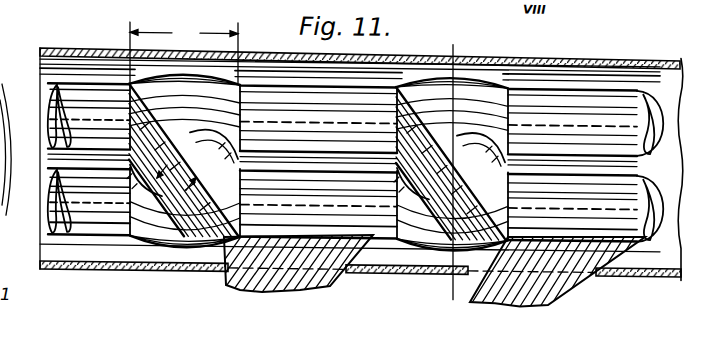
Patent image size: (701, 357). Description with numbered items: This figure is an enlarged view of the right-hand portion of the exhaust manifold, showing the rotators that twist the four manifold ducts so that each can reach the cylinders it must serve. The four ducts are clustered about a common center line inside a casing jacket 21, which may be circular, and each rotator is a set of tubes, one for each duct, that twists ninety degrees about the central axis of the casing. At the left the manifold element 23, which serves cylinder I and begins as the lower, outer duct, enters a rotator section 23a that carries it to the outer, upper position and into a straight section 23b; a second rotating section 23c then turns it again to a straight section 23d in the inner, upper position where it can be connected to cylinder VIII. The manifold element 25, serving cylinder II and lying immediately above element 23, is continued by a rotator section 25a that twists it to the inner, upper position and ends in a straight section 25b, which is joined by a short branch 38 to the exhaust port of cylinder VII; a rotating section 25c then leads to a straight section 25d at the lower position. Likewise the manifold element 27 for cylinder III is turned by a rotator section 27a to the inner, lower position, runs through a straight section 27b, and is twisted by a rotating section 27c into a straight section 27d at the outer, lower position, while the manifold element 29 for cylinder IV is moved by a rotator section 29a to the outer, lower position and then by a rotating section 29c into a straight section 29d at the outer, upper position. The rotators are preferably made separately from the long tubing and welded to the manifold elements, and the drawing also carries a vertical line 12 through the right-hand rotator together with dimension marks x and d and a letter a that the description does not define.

The section line 12 is at (449, 166).
The casing jacket 21 is at (50, 69).
The manifold element 23 is at (72, 86).
The rotator section 23a is at (163, 88).
The straight section 23b is at (272, 94).
The rotating section 23c is at (506, 124).
The straight section 23d is at (623, 220).
The manifold element 25 is at (92, 92).
The rotator section 25a is at (150, 220).
The straight section 25b is at (377, 217).
The rotating section 25c is at (430, 229).
The straight section 25d is at (662, 236).
The manifold element 27 is at (97, 209).
The rotator section 27a is at (172, 236).
The straight section 27b is at (459, 7).
The rotating section 27c is at (522, 176).
The straight section 27d is at (660, 104).
The manifold element 29 is at (53, 220).
The rotator section 29a is at (240, 125).
The rotating section 29c is at (433, 75).
The straight section 29d is at (603, 94).
The short branch 38 is at (290, 280).
The pitch dimension x is at (184, 53).
The thickness dimension d is at (176, 170).
The strip width a is at (318, 205).